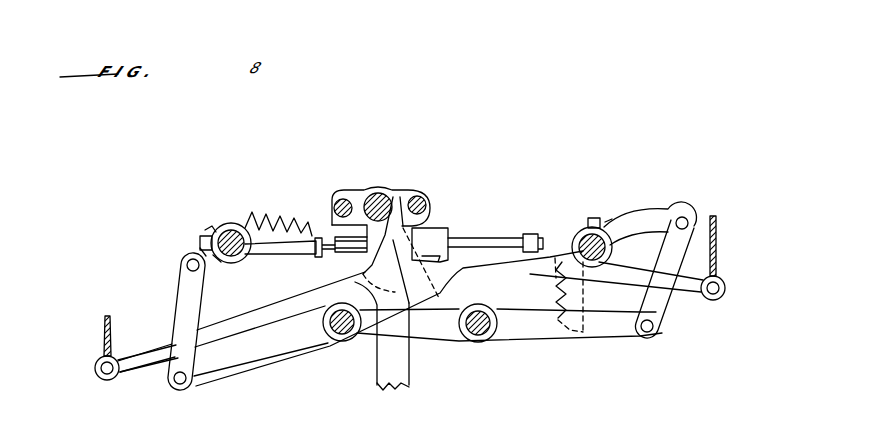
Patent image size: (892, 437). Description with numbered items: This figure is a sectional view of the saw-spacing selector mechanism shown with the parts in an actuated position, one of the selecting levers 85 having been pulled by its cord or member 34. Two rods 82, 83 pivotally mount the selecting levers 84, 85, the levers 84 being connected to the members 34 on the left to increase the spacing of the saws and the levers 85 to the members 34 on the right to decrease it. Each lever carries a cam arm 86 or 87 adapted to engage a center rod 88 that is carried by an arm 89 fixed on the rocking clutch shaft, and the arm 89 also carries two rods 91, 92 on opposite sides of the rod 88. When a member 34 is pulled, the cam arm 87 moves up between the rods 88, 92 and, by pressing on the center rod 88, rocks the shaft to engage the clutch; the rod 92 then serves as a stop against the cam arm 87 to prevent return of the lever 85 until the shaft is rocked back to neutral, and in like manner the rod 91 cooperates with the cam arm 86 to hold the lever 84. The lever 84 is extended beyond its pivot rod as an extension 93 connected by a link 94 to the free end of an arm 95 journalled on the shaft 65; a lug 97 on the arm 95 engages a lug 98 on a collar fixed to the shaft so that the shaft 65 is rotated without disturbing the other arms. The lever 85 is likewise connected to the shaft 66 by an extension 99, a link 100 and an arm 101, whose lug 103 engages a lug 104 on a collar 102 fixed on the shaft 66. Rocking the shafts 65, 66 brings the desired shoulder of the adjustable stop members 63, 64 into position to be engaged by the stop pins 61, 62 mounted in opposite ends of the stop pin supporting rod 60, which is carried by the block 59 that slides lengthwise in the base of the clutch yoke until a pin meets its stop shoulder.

The member 34 is at (103, 328).
The block 59 is at (445, 228).
The stop pin supporting rod 60 is at (505, 238).
The stop pin 61 is at (532, 235).
The stop pin 62 is at (320, 228).
The stop member 63 is at (584, 290).
The stop member 64 is at (299, 250).
The shaft 65 is at (582, 229).
The shaft 66 is at (240, 257).
The rod 82 is at (482, 336).
The rod 83 is at (341, 344).
The selecting lever 84 is at (154, 370).
The selecting lever 85 is at (517, 272).
The cam arm 86 is at (388, 232).
The cam arm 87 is at (400, 231).
The center rod 88 is at (380, 194).
The arm 89 is at (394, 390).
The rod 91 is at (345, 200).
The rod 92 is at (417, 197).
The extension 93 is at (608, 340).
The link 94 is at (680, 290).
The arm 95 is at (668, 212).
The lug 97 is at (594, 218).
The lug 98 is at (612, 221).
The extension 99 is at (293, 362).
The link 100 is at (184, 333).
The arm 101 is at (200, 250).
The collar 102 is at (224, 264).
The lug 103 is at (212, 228).
The lug 104 is at (205, 243).